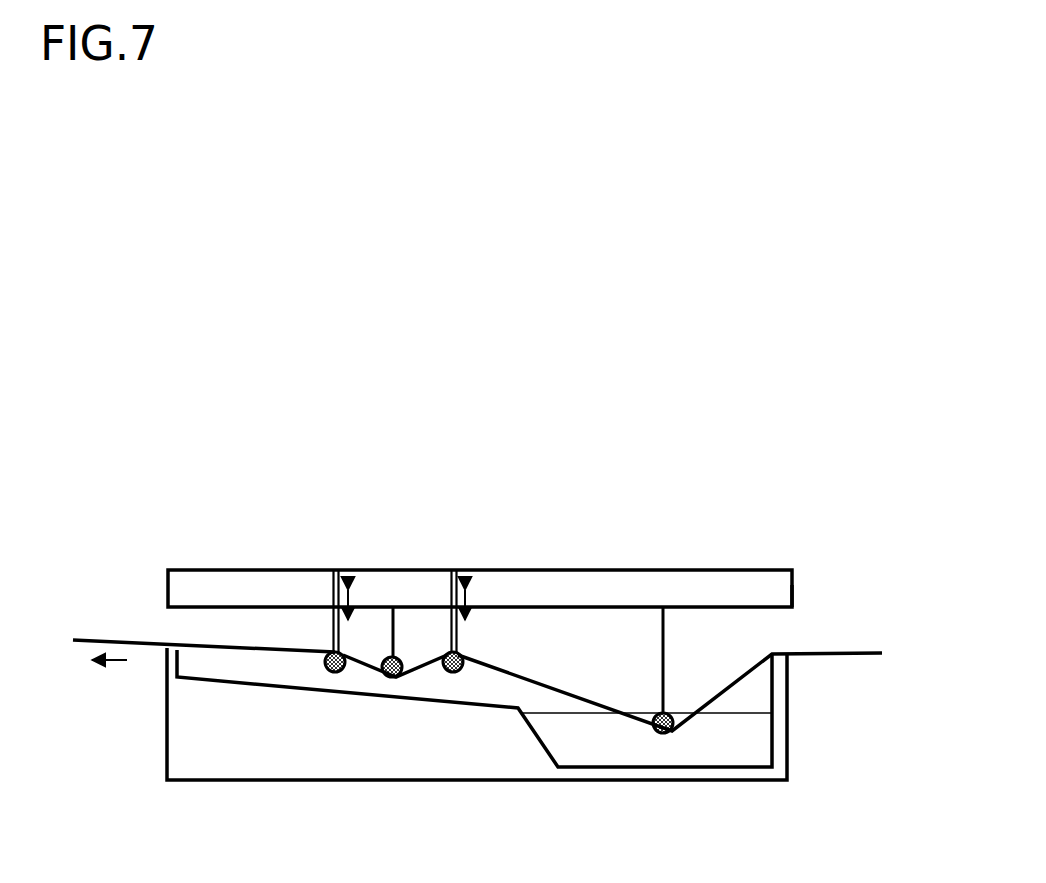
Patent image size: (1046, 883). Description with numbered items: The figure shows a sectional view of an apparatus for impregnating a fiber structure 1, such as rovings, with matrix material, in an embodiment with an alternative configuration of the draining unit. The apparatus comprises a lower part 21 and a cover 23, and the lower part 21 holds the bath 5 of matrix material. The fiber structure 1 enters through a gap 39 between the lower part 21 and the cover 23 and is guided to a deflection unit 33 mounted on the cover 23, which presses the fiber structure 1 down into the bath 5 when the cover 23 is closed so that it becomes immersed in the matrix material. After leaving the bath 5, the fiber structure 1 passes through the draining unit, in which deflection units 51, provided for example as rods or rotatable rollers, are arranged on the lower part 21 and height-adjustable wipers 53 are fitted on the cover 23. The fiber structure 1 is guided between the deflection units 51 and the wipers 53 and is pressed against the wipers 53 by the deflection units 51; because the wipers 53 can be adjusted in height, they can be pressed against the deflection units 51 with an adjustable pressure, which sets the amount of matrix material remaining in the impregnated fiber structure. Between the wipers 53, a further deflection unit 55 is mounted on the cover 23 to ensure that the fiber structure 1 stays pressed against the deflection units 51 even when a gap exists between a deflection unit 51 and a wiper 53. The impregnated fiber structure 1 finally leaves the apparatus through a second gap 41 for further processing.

The fiber structure 1 is at (855, 650).
The bath 5 is at (605, 755).
The lower part 21 is at (430, 765).
The cover 23 is at (522, 590).
The deflection unit 33 is at (673, 733).
The gap 39 is at (776, 624).
The second gap 41 is at (172, 620).
The deflection units 51 is at (450, 673).
The height-adjustable wipers 53 is at (453, 567).
The further deflection unit 55 is at (399, 657).